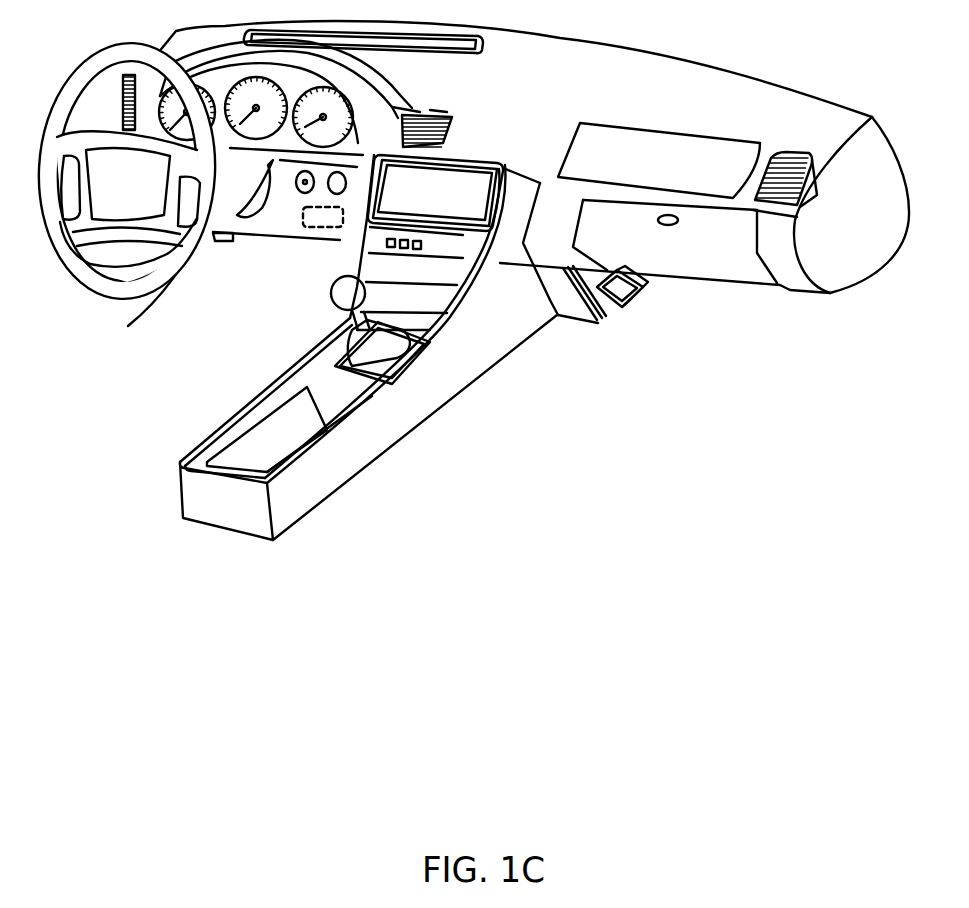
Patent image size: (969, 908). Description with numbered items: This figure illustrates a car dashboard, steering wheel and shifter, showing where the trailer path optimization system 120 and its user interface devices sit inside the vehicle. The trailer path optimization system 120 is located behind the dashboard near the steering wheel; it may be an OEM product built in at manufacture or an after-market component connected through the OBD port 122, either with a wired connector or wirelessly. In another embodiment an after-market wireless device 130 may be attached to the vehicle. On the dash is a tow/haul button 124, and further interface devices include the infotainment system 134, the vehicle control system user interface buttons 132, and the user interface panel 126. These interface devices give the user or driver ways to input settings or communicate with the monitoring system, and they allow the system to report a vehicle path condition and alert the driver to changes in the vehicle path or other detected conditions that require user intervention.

The trailer path optimization system 120 is at (285, 233).
The OBD port 122 is at (126, 196).
The tow/haul button 124 is at (480, 177).
The user interface panel 126 is at (346, 183).
The after-market wireless device 130 is at (630, 303).
The vehicle control system user interface buttons 132 is at (387, 243).
The infotainment system 134 is at (447, 270).